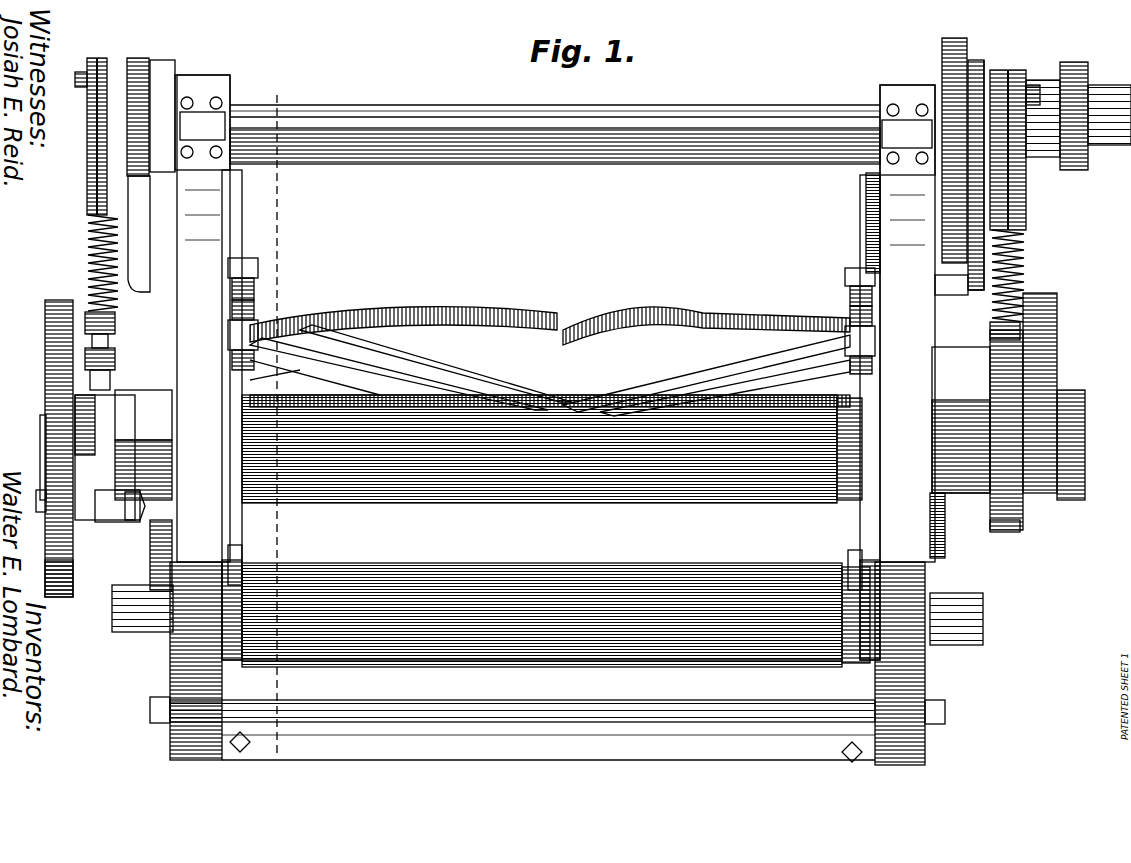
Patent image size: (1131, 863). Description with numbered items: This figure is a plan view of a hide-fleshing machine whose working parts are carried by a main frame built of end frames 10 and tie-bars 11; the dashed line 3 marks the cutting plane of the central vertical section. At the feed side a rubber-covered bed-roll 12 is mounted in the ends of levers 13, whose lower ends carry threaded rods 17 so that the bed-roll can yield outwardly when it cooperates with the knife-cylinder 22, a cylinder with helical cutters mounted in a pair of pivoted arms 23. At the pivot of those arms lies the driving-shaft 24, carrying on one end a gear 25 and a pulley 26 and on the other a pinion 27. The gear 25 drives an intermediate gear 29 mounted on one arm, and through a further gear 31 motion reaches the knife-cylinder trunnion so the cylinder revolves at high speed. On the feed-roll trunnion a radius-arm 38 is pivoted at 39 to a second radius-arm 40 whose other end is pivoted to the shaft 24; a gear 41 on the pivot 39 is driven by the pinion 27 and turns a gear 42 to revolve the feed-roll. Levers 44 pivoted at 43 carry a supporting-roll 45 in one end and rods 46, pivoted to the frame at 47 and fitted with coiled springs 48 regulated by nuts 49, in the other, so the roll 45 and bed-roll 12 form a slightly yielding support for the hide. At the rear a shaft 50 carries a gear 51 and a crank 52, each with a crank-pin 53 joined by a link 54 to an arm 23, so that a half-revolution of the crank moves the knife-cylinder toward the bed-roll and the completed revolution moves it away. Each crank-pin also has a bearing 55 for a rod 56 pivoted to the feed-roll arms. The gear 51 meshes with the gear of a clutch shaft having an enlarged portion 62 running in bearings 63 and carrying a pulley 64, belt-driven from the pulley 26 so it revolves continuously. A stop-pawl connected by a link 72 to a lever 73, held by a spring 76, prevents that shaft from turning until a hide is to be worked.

The cutting plane line 3 is at (273, 430).
The end frame 10 is at (210, 262).
The tie-bar 11 is at (415, 115).
The bed-roll 12 is at (648, 578).
The lever 13 is at (135, 630).
The threaded rod 17 is at (152, 548).
The knife-cylinder 22 is at (550, 351).
The arm 23 is at (120, 505).
The shaft 24 is at (402, 440).
The gear 25 is at (1008, 530).
The pulley 26 is at (1078, 402).
The pinion 27 is at (45, 395).
The intermediate gear 29 is at (1050, 310).
The gear 31 is at (1042, 338).
The radius-arm 38 is at (105, 522).
The pivot 39 is at (40, 512).
The second radius-arm 40 is at (95, 528).
The gear 41 is at (42, 446).
The gear 42 is at (60, 598).
The pivot 43 is at (245, 575).
The lever 44 is at (237, 520).
The supporting-roll 45 is at (388, 650).
The rod 46 is at (255, 262).
The pivot 47 is at (256, 285).
The coiled spring 48 is at (256, 305).
The nut 49 is at (258, 332).
The shaft 50 is at (675, 152).
The gear 51 is at (945, 65).
The crank 52 is at (165, 75).
The crank-pin 53 is at (1040, 68).
The link 54 is at (138, 58).
The bearing 55 is at (97, 58).
The rod 56 is at (90, 230).
The enlarged portion 62 is at (1043, 150).
The bearing 63 is at (895, 95).
The pulley 64 is at (1076, 75).
The link 72 is at (1010, 288).
The lever 73 is at (936, 290).
The spring 76 is at (866, 250).